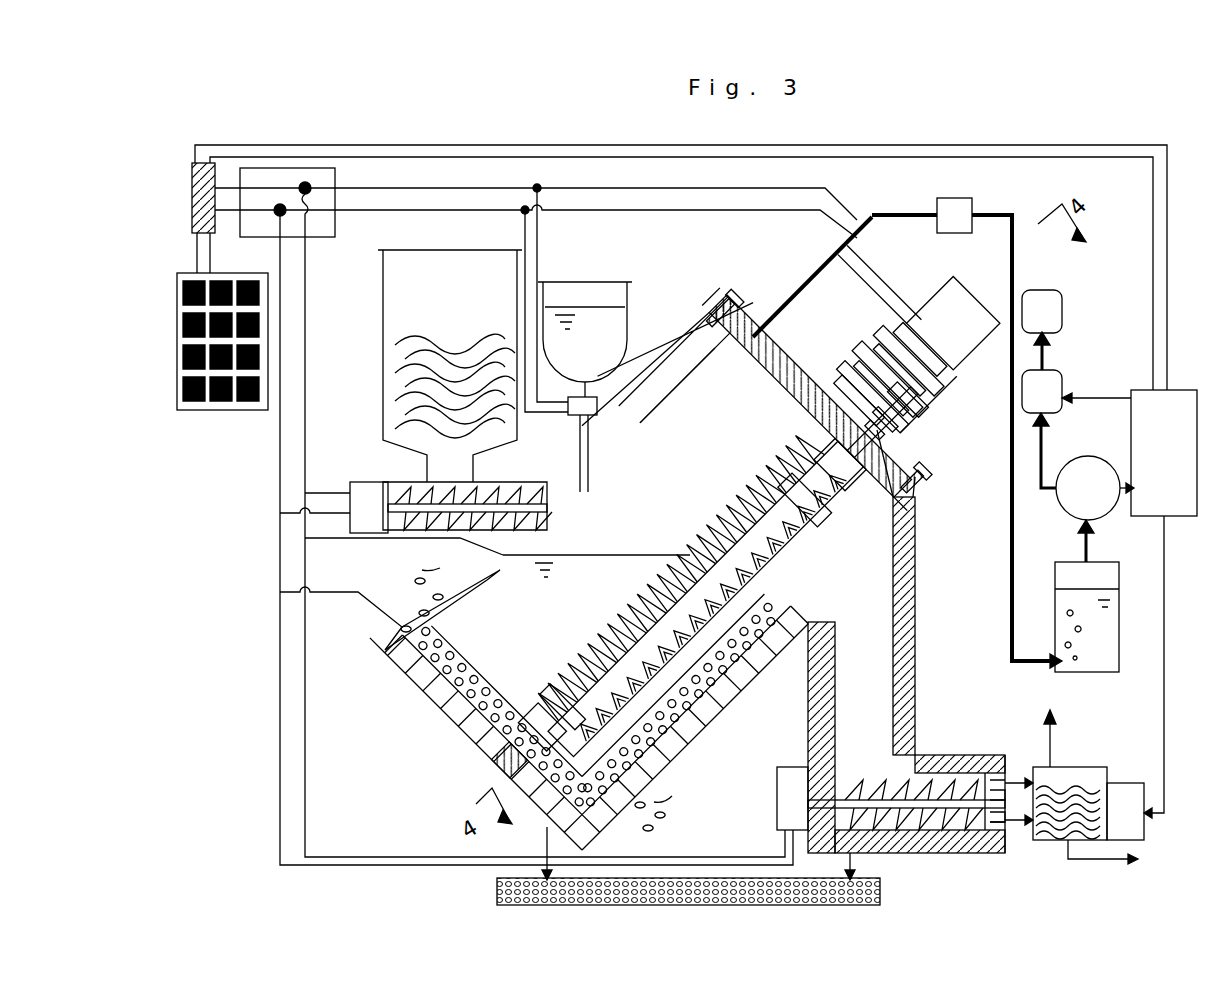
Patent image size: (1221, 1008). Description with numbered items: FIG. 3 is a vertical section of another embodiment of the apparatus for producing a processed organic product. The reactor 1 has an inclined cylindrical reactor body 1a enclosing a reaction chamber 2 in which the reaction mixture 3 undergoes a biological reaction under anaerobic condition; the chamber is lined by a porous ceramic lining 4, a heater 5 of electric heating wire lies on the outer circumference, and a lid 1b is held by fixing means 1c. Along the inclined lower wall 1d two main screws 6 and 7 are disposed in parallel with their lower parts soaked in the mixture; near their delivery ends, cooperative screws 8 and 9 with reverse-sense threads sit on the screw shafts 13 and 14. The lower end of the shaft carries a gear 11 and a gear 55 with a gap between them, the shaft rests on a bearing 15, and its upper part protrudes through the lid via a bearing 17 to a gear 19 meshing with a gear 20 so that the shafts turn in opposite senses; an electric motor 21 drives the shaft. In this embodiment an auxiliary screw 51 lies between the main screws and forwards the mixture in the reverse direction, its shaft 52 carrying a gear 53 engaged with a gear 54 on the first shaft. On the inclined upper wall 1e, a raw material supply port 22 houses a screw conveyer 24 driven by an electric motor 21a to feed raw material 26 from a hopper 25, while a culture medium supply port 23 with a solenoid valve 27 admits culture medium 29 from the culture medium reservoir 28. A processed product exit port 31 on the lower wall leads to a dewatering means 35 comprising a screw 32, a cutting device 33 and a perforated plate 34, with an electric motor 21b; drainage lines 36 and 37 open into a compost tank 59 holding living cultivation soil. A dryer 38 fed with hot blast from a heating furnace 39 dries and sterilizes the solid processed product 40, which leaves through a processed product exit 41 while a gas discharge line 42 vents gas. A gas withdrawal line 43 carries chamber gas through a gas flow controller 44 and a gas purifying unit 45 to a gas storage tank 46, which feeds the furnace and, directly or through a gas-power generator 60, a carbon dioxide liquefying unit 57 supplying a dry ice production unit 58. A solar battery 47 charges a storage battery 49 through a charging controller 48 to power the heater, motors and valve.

The reactor 1 is at (690, 332).
The cylindrical reactor body 1a is at (410, 680).
The lid 1b is at (922, 520).
The fixing means 1c is at (748, 292).
The inclined lower wall 1d is at (720, 718).
The inclined upper wall 1e is at (648, 452).
The reaction chamber 2 is at (664, 386).
The reaction mixture 3 is at (614, 553).
The porous lining 4 is at (486, 620).
The heater 5 is at (668, 806).
The main screw 6 is at (746, 462).
The main screw 7 is at (696, 514).
The cooperative screw 8 is at (868, 478).
The cooperative screw 9 is at (794, 420).
The gear 11 is at (526, 696).
The screw shaft 13 is at (825, 496).
The screw shaft 14 is at (786, 448).
The bearing 15 is at (488, 772).
The bearing 17 is at (790, 376).
The gear 19 is at (935, 414).
The gear 20 is at (862, 332).
The electric motor 21 is at (975, 304).
The electric motor 21a is at (352, 540).
The electric motor 21b is at (777, 806).
The raw material supply port 22 is at (512, 484).
The culture medium supply port 23 is at (566, 420).
The screw conveyer 24 is at (412, 467).
The hopper 25 is at (406, 290).
The raw material 26 is at (400, 354).
The solenoid valve 27 is at (612, 448).
The culture medium reservoir 28 is at (620, 306).
The culture medium 29 is at (588, 306).
The processed product exit port 31 is at (915, 625).
The screw 32 is at (870, 772).
The cutting device 33 is at (982, 773).
The perforated plate 34 is at (986, 750).
The dewatering means 35 is at (931, 752).
The drainage line 36 is at (545, 848).
The drainage line 37 is at (843, 846).
The dryer 38 is at (1058, 768).
The heating furnace 39 is at (1122, 784).
The solid processed product 40 is at (1074, 786).
The processed product exit 41 is at (1100, 862).
The gas discharge line 42 is at (1040, 760).
The gas withdrawal line 43 is at (816, 268).
The gas flow controller 44 is at (958, 233).
The gas purifying unit 45 is at (1064, 608).
The gas storage tank 46 is at (1060, 500).
The solar battery 47 is at (222, 410).
The charging controller 48 is at (215, 228).
The storage battery 49 is at (330, 222).
The auxiliary screw 51 is at (822, 546).
The shaft 52 is at (828, 525).
The gear 53 is at (920, 445).
The gear 54 is at (842, 380).
The gear 55 is at (543, 688).
The carbon dioxide liquefying unit 57 is at (1062, 378).
The dry ice production unit 58 is at (1062, 300).
The compost tank 59 is at (495, 888).
The gas-power generator 60 is at (1132, 458).